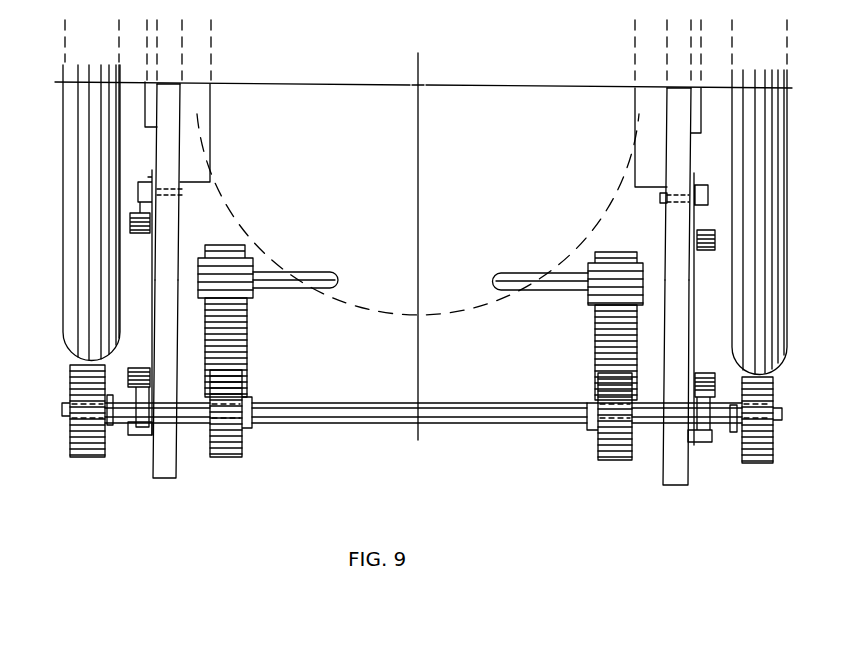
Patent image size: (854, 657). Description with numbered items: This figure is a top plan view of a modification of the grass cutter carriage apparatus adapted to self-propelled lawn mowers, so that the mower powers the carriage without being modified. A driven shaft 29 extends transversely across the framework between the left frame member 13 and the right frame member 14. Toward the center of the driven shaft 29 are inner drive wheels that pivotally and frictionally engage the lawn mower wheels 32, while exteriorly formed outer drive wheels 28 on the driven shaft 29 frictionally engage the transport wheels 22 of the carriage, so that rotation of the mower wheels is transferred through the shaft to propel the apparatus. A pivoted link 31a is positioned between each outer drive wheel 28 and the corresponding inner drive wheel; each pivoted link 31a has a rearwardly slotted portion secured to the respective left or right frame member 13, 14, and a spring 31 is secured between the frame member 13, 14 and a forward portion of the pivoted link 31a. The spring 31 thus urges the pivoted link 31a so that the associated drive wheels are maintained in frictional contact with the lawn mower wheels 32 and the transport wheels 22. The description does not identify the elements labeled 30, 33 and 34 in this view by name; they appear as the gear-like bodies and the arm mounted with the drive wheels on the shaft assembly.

The left frame member 13 is at (668, 214).
The right frame member 14 is at (171, 208).
The transport wheels 22 is at (78, 352).
The outer drive wheels 28 is at (88, 452).
The driven shaft 29 is at (305, 418).
The pinion gear 30 is at (222, 453).
The spring 31 is at (136, 366).
The pivoted link 31a is at (173, 467).
The lawn mower wheels 32 is at (243, 352).
The bearing cap 33 is at (254, 300).
The arm 34 is at (278, 283).